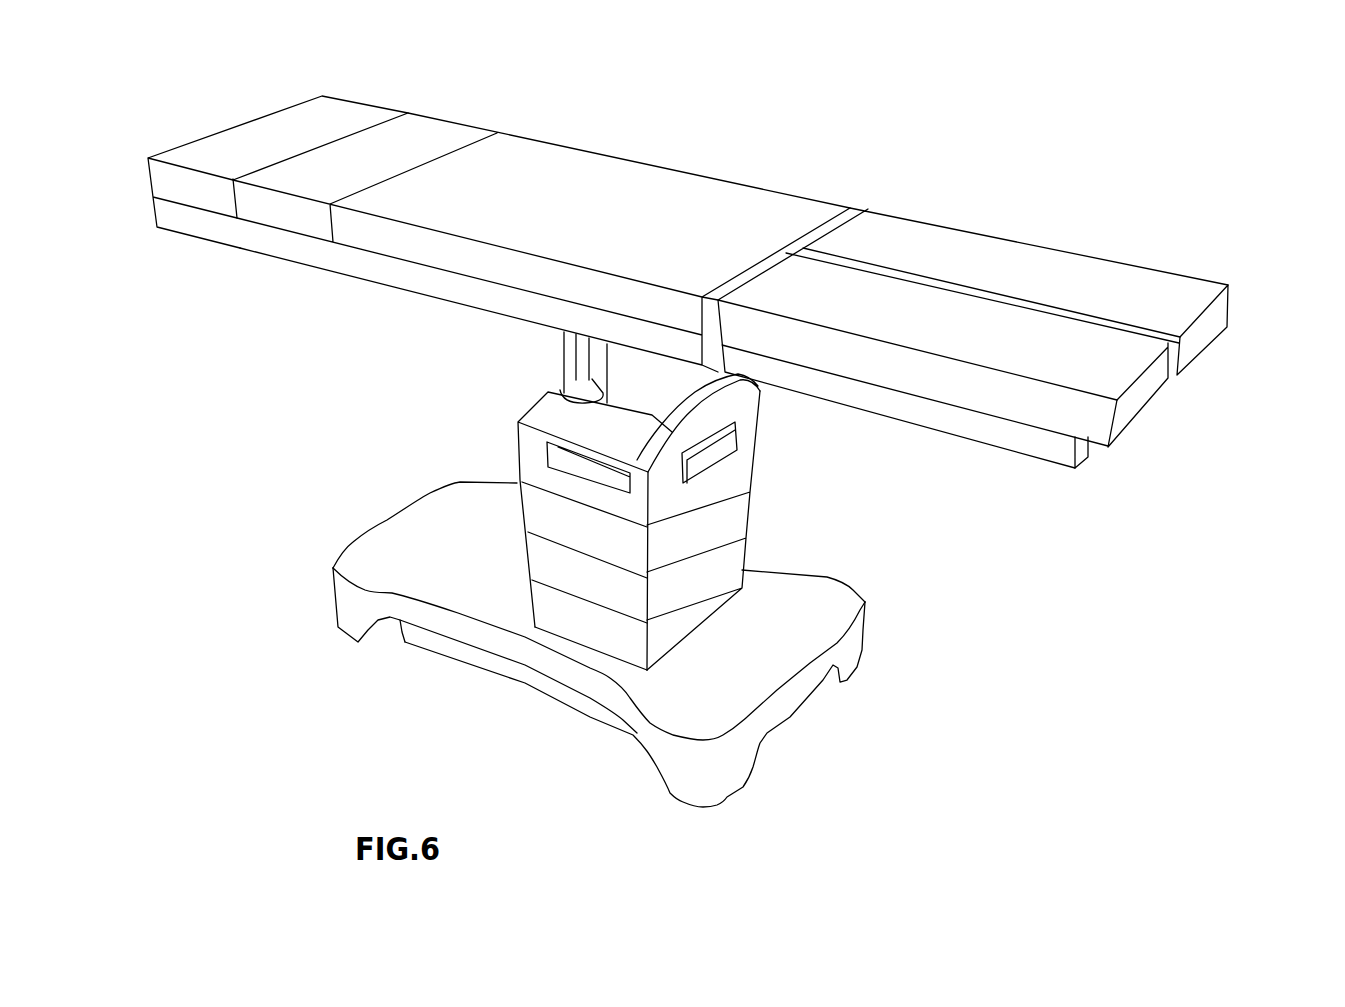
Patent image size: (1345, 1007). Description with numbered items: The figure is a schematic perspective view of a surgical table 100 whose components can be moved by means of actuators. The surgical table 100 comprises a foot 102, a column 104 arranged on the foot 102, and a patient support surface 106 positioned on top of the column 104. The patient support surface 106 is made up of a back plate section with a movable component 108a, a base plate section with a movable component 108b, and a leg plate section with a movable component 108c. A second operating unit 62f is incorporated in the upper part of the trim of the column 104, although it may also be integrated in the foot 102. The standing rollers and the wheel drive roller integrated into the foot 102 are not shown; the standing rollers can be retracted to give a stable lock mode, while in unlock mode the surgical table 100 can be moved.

The surgical table 100 is at (735, 418).
The foot 102 is at (803, 722).
The column 104 is at (647, 501).
The patient support surface 106 is at (717, 269).
The movable component 108a is at (408, 107).
The movable component 108b is at (653, 153).
The movable component 108c is at (1055, 232).
The second operating unit 62f is at (548, 457).